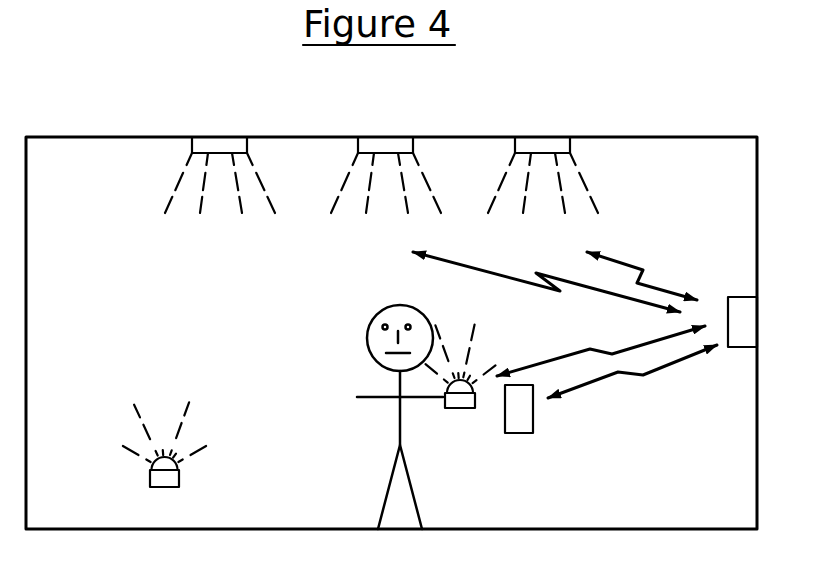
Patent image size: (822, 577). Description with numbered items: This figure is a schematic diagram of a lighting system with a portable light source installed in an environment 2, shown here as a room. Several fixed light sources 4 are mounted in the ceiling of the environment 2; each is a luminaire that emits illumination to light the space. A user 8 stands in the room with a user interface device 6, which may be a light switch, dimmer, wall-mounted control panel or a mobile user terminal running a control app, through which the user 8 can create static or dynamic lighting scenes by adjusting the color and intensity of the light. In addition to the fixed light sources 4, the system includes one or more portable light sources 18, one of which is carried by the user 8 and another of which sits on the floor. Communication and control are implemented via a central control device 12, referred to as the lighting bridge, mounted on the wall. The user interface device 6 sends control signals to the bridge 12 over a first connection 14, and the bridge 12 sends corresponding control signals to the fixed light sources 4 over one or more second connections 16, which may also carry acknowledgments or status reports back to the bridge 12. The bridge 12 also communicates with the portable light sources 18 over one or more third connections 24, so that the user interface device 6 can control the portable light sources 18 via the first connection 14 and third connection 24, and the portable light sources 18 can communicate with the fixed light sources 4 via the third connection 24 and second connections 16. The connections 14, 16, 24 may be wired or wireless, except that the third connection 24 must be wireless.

The environment 2 is at (636, 137).
The fixed light source 4 is at (531, 146).
The user interface device 6 is at (533, 420).
The user 8 is at (379, 313).
The central control device 12 is at (750, 325).
The first connection 14 is at (670, 360).
The second connection 16 is at (656, 280).
The portable light source 18 is at (458, 409).
The third connection 24 is at (555, 362).